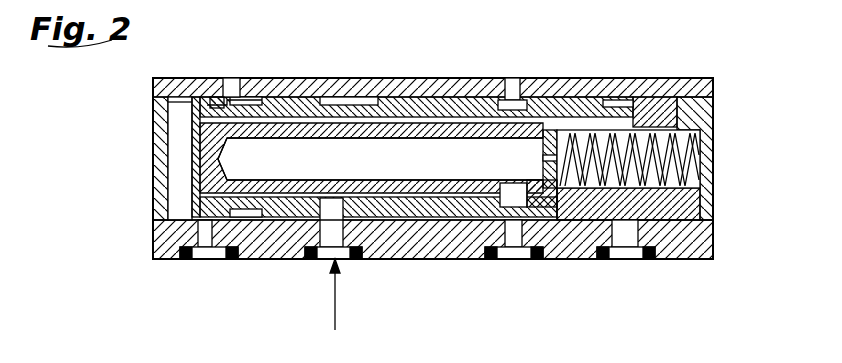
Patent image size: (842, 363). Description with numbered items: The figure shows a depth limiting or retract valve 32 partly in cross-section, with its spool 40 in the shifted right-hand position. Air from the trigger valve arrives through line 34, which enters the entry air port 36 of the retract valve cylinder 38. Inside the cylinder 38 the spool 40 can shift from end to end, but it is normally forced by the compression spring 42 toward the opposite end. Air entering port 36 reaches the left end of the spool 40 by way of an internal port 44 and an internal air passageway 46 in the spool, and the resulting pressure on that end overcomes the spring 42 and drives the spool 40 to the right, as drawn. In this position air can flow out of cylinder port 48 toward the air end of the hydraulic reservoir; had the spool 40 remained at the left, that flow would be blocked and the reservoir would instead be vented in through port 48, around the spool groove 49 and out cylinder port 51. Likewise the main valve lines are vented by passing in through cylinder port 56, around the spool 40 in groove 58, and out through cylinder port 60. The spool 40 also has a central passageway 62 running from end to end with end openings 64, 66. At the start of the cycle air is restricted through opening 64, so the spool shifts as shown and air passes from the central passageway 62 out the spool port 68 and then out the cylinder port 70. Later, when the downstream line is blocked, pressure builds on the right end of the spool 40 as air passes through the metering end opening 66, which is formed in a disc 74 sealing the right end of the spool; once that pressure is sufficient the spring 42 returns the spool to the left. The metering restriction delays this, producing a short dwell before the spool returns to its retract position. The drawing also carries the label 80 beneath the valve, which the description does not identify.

The retract valve 32 is at (390, 78).
The line 34 is at (335, 312).
The entry air port 36 is at (327, 250).
The retract valve cylinder 38 is at (413, 247).
The spool 40 is at (457, 87).
The compression spring 42 is at (683, 145).
The internal port 44 is at (350, 185).
The internal air passageway 46 is at (283, 194).
The cylinder port 48 is at (185, 250).
The spool groove 49 is at (250, 103).
The cylinder port 51 is at (230, 100).
The cylinder port 56 is at (508, 258).
The spool groove 58 is at (507, 210).
The cylinder port 60 is at (517, 90).
The central passageway 62 is at (381, 167).
The end opening 64 is at (197, 158).
The metering end opening 66 is at (560, 135).
The spool port 68 is at (512, 190).
The cylinder port 70 is at (625, 250).
The disc 74 is at (557, 170).
The valve assembly 80 is at (433, 310).